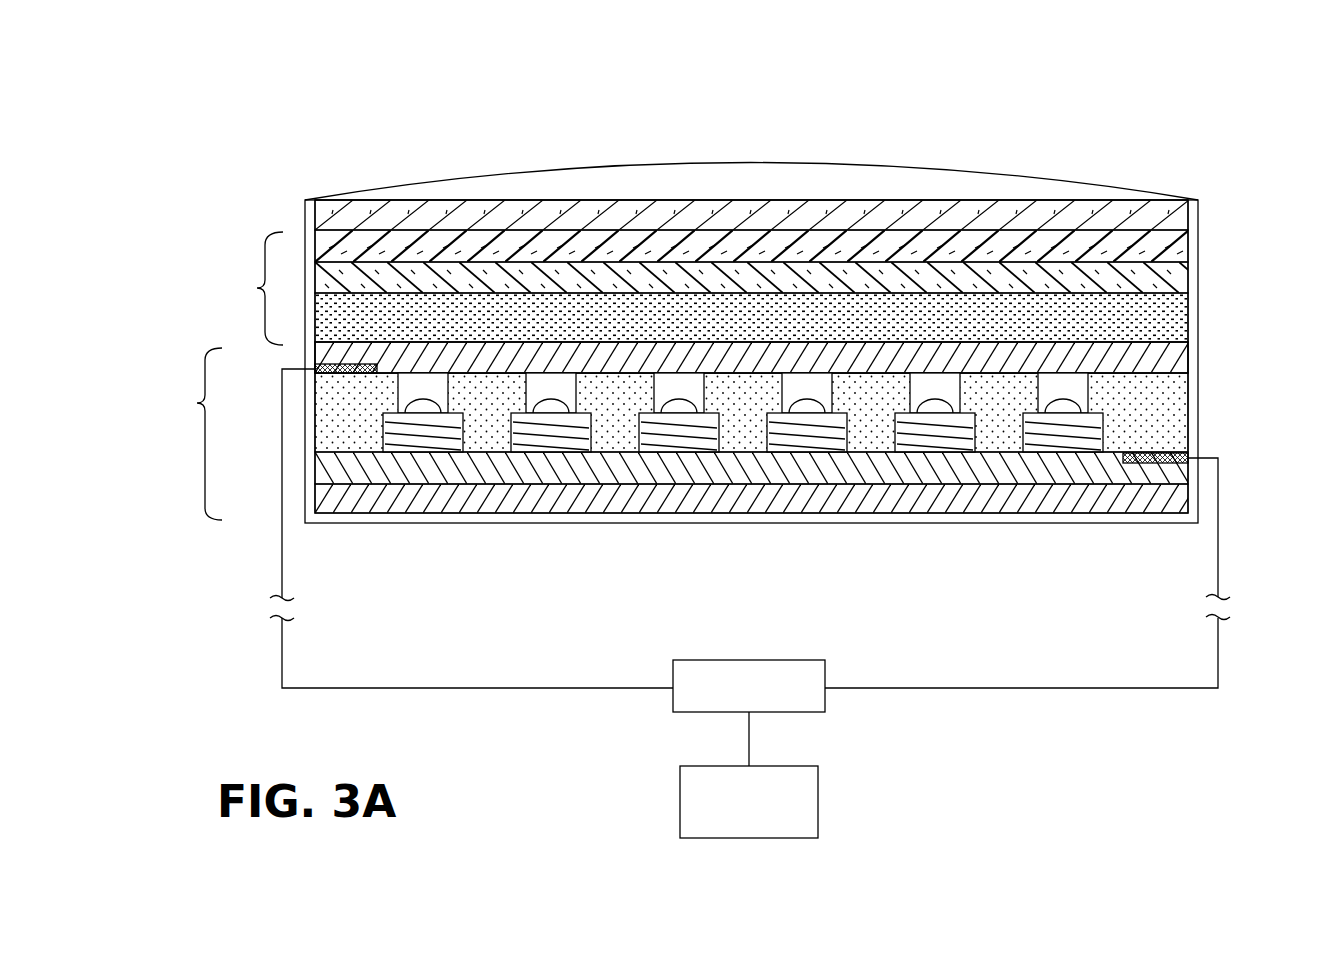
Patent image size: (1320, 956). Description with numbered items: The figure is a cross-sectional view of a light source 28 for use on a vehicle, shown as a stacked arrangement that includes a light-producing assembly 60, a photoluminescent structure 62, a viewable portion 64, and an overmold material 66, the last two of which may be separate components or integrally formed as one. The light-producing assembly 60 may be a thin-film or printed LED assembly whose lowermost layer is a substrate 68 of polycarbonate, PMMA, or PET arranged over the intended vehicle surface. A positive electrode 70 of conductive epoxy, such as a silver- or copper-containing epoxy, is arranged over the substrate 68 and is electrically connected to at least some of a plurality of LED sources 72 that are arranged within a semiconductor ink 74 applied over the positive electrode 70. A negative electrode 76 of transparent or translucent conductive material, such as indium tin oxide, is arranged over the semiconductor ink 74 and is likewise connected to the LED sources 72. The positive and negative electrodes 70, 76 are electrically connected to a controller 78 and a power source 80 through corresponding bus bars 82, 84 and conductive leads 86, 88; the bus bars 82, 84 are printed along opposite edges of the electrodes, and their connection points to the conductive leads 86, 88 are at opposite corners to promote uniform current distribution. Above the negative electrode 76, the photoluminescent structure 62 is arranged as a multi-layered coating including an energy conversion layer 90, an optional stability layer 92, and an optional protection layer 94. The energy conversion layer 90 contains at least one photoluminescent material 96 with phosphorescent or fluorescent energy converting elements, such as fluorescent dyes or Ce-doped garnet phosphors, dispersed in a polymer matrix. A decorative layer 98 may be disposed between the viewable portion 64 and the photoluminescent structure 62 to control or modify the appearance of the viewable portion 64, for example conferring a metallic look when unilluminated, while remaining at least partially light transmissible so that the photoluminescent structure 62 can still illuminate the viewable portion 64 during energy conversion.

The light source 28 is at (1027, 93).
The light-producing assembly 60 is at (191, 434).
The photoluminescent structure 62 is at (251, 288).
The viewable portion 64 is at (1067, 180).
The overmold material 66 is at (1193, 197).
The substrate 68 is at (1192, 502).
The positive electrode 70 is at (1192, 472).
The LED sources 72 is at (437, 435).
The semiconductor ink 74 is at (1190, 405).
The negative electrode 76 is at (1190, 360).
The controller 78 is at (826, 703).
The power source 80 is at (819, 786).
The bus bar 82 is at (1192, 453).
The bus bar 84 is at (315, 368).
The conductive lead 86 is at (1220, 565).
The conductive lead 88 is at (282, 562).
The energy conversion layer 90 is at (1190, 308).
The stability layer 92 is at (1190, 272).
The protection layer 94 is at (1190, 235).
The photoluminescent material 96 is at (1183, 342).
The decorative layer 98 is at (1198, 220).